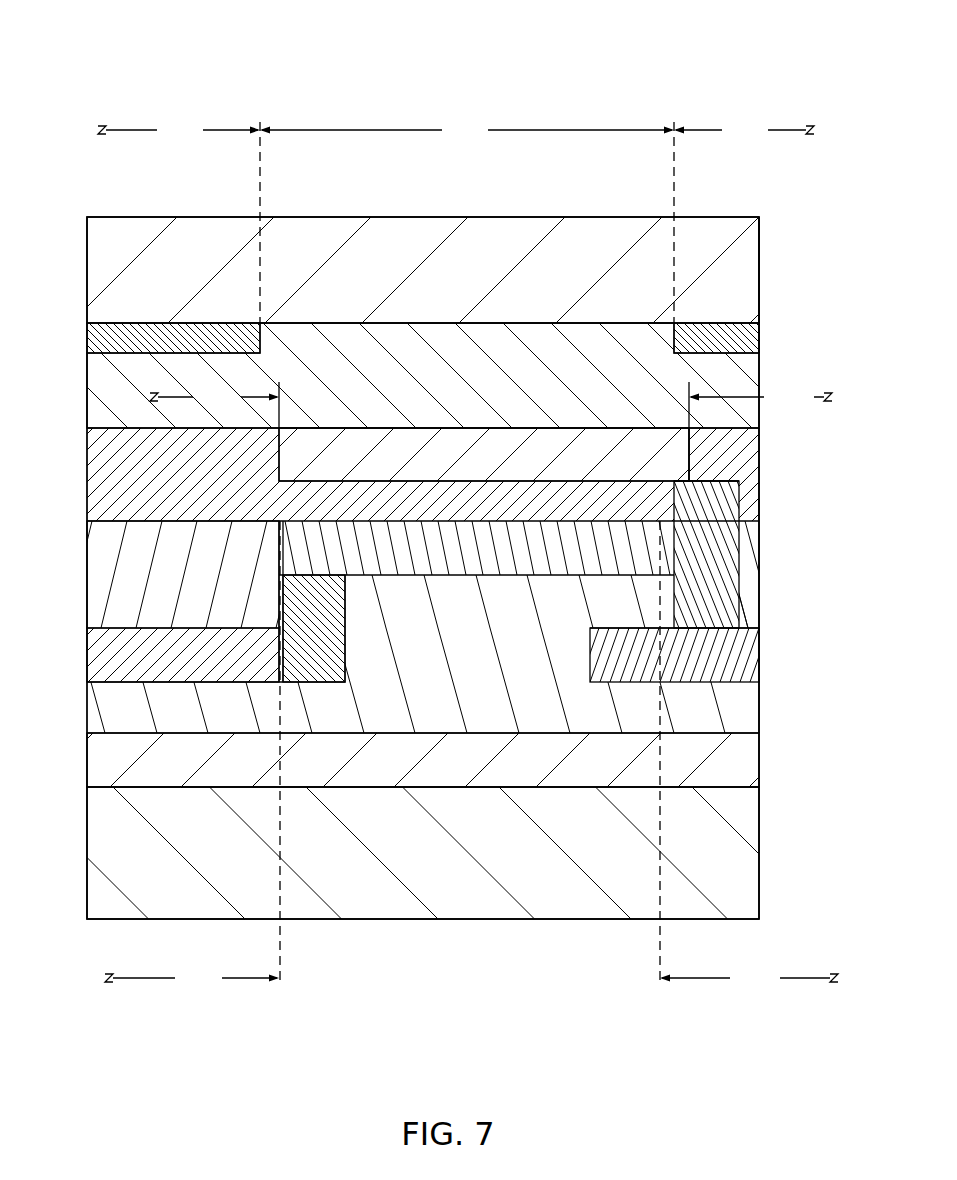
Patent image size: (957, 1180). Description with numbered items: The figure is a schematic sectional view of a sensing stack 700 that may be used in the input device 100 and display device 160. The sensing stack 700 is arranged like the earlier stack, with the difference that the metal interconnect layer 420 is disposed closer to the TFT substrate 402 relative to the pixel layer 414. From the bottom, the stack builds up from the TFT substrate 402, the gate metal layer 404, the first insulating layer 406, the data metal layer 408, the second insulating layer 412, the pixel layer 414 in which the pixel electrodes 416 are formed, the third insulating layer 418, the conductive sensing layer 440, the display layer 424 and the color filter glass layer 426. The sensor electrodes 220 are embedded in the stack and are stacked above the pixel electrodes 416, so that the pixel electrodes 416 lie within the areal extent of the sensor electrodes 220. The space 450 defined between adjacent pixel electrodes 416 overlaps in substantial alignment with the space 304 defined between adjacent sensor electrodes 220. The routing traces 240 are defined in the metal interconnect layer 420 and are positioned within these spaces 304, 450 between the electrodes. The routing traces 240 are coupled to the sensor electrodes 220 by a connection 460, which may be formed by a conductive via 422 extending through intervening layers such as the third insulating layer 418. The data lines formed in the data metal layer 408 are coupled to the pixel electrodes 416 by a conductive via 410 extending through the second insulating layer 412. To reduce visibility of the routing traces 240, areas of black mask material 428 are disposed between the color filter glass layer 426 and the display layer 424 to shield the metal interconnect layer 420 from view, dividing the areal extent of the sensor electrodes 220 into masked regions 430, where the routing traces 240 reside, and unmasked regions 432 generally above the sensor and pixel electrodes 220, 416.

The input device 100 is at (423, 470).
The display device 160 is at (798, 259).
The sensing stack 700 is at (820, 437).
The sensor electrodes 220 is at (540, 441).
The routing traces 240 is at (745, 664).
The space between adjacent sensor electrodes 304 is at (491, 405).
The thin film transistor substrate 402 is at (447, 870).
The gate metal layer 404 is at (447, 774).
The first insulating layer 406 is at (447, 700).
The data metal layer 408 is at (104, 652).
The conductive via 410 is at (300, 599).
The second insulating layer 412 is at (154, 585).
The pixel layer 414 is at (288, 543).
The pixel electrodes 416 is at (447, 561).
The third insulating layer 418 is at (154, 476).
The metal interconnect layer 420 is at (748, 643).
The conductive via 422 is at (726, 583).
The display layer 424 is at (447, 383).
The color filter glass layer 426 is at (700, 277).
The black mask material 428 is at (258, 337).
The masked regions 430 is at (456, 130).
The unmasked regions 432 is at (467, 130).
The conductive sensing layer 440 is at (672, 446).
The space between adjacent pixel electrodes 450 is at (471, 978).
The connection 460 is at (694, 497).